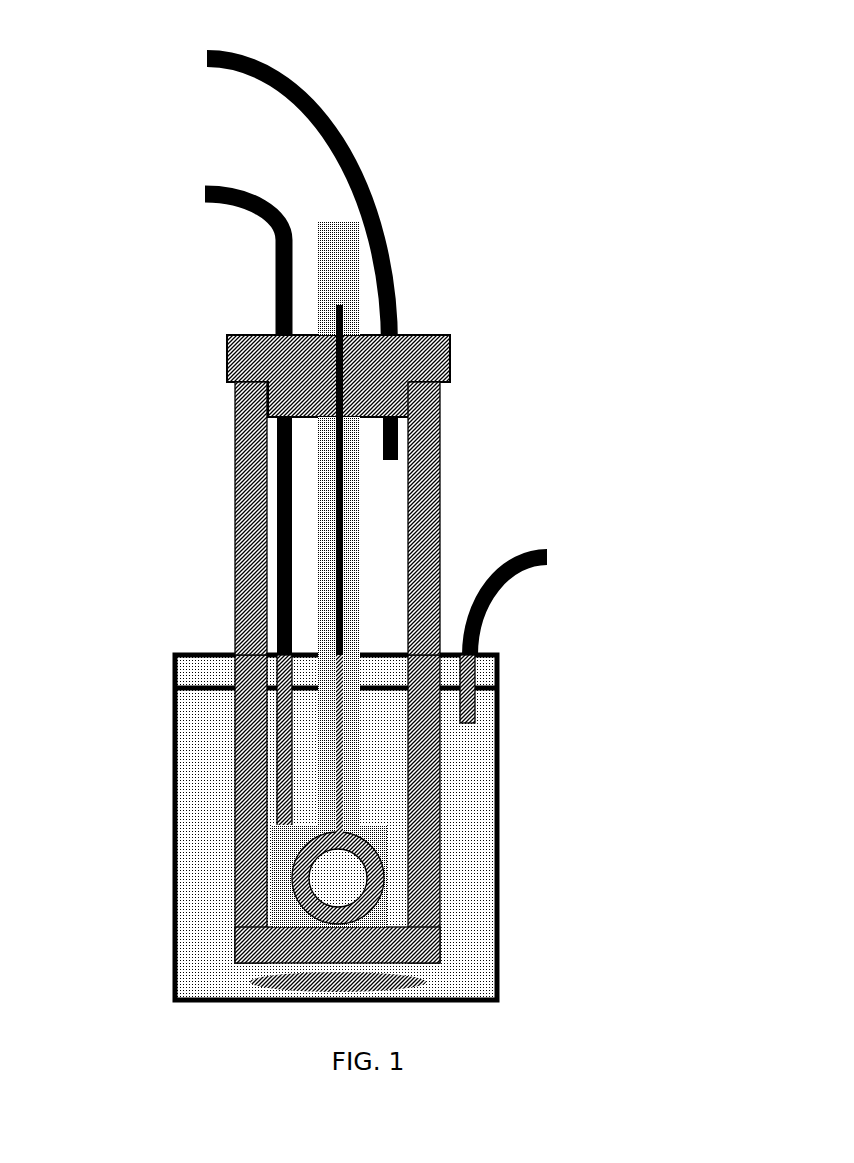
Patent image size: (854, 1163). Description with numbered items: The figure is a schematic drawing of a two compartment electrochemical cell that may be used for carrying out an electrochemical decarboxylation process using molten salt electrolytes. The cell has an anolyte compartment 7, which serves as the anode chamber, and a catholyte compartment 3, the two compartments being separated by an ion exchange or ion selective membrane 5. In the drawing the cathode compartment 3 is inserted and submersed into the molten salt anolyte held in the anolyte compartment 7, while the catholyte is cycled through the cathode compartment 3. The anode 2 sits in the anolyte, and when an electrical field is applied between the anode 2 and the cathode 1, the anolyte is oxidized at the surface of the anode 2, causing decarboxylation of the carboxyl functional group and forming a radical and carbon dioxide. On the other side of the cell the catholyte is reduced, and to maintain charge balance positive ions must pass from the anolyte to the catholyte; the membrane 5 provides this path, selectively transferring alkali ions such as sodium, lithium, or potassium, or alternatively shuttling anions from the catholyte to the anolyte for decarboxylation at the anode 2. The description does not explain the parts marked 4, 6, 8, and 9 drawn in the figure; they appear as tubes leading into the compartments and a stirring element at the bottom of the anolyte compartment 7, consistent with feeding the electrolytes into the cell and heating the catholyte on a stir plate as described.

The cathode 1 is at (345, 230).
The anode 2 is at (358, 297).
The catholyte compartment 3 is at (402, 592).
The inlet tube 4 is at (507, 611).
The membrane 5 is at (368, 880).
The magnetic stirrer bar 6 is at (455, 983).
The anolyte compartment 7 is at (188, 777).
The gas tube 8 is at (264, 268).
The gas outlet tube 9 is at (323, 123).